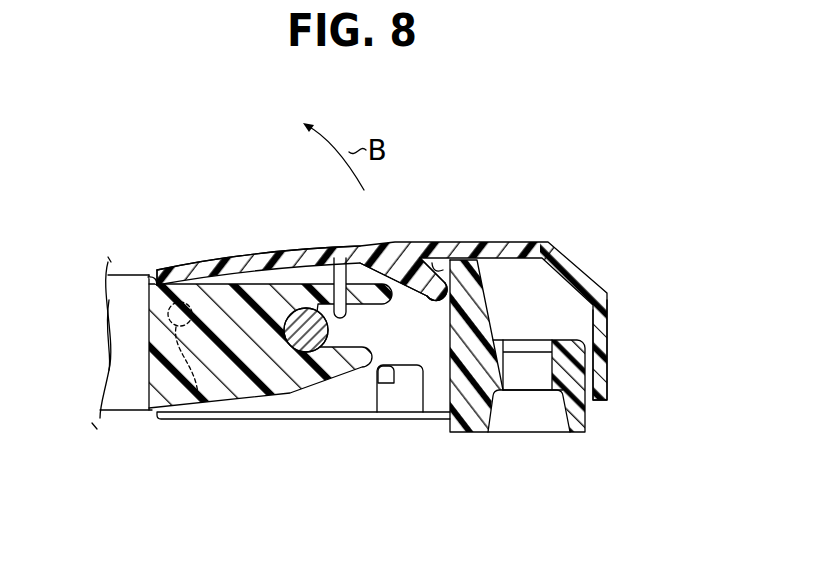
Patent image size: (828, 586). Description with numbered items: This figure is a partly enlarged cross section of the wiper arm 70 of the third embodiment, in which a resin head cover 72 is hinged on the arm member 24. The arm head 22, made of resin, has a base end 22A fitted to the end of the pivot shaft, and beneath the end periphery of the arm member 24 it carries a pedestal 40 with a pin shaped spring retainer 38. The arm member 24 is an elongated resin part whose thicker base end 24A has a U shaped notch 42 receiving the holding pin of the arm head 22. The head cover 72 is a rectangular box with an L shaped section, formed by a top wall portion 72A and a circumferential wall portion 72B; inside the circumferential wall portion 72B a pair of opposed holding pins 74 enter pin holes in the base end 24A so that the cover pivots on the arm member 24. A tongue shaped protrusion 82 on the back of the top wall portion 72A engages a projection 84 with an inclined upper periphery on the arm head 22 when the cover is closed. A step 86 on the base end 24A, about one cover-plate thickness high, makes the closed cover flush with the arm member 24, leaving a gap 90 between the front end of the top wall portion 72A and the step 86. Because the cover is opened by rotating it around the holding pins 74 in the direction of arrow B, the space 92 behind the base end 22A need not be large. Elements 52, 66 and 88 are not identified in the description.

The arm head 22 is at (475, 438).
The base end of the arm head 22A is at (562, 349).
The arm member 24 is at (130, 420).
The base end of the arm member 24A is at (253, 395).
The spring retainer 38 is at (386, 384).
The pedestal 40 is at (401, 406).
The notch 42 is at (334, 258).
The engaging portion 52 is at (385, 278).
The roller 66 is at (314, 393).
The wiper arm 70 is at (254, 152).
The head cover 72 is at (512, 230).
The top wall portion 72A is at (268, 251).
The circumferential wall portion 72B is at (608, 332).
The holding pins 74 is at (199, 396).
The protrusion 82 is at (430, 265).
The projection 84 is at (448, 243).
The step 86 is at (101, 306).
The end portion 88 is at (165, 271).
The gap 90 is at (156, 279).
The space 92 is at (604, 412).